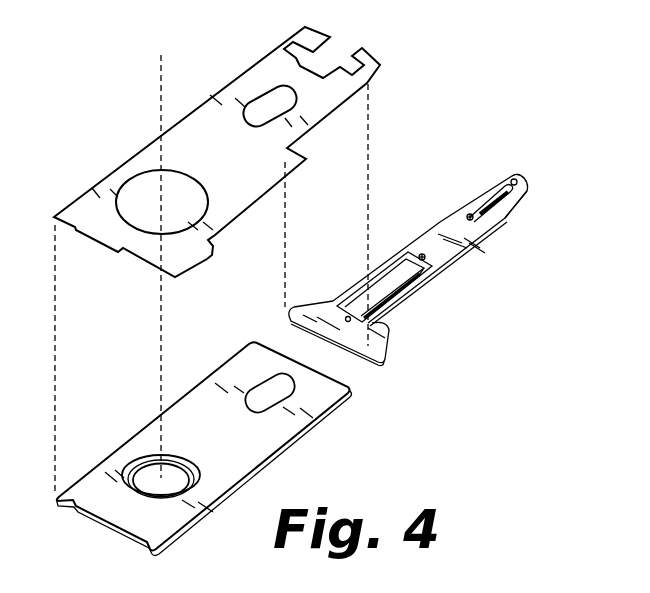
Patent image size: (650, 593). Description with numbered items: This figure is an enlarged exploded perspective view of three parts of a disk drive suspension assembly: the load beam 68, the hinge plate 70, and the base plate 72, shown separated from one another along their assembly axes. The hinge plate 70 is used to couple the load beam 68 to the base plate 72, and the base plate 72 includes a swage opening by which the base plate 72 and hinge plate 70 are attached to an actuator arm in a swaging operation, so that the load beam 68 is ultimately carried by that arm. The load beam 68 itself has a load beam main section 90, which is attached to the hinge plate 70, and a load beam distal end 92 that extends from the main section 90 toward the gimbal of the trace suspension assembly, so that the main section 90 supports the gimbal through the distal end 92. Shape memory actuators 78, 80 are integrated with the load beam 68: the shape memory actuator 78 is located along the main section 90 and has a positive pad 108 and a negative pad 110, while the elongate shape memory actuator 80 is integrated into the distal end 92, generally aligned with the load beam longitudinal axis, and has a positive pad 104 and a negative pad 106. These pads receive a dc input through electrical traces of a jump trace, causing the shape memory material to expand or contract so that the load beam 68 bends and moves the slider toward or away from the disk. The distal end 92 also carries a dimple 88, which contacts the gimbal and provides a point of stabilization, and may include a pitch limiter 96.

The load beam 68 is at (402, 312).
The hinge plate 70 is at (140, 158).
The base plate 72 is at (138, 447).
The shape memory actuator 78 is at (420, 275).
The shape memory actuator 80 is at (503, 208).
The dimple 88 is at (518, 180).
The load beam main section 90 is at (410, 306).
The load beam distal end 92 is at (522, 196).
The pitch limiter 96 is at (496, 181).
The positive pad 104 is at (461, 208).
The negative pad 106 is at (512, 176).
The positive pad 108 is at (415, 247).
The negative pad 110 is at (349, 322).